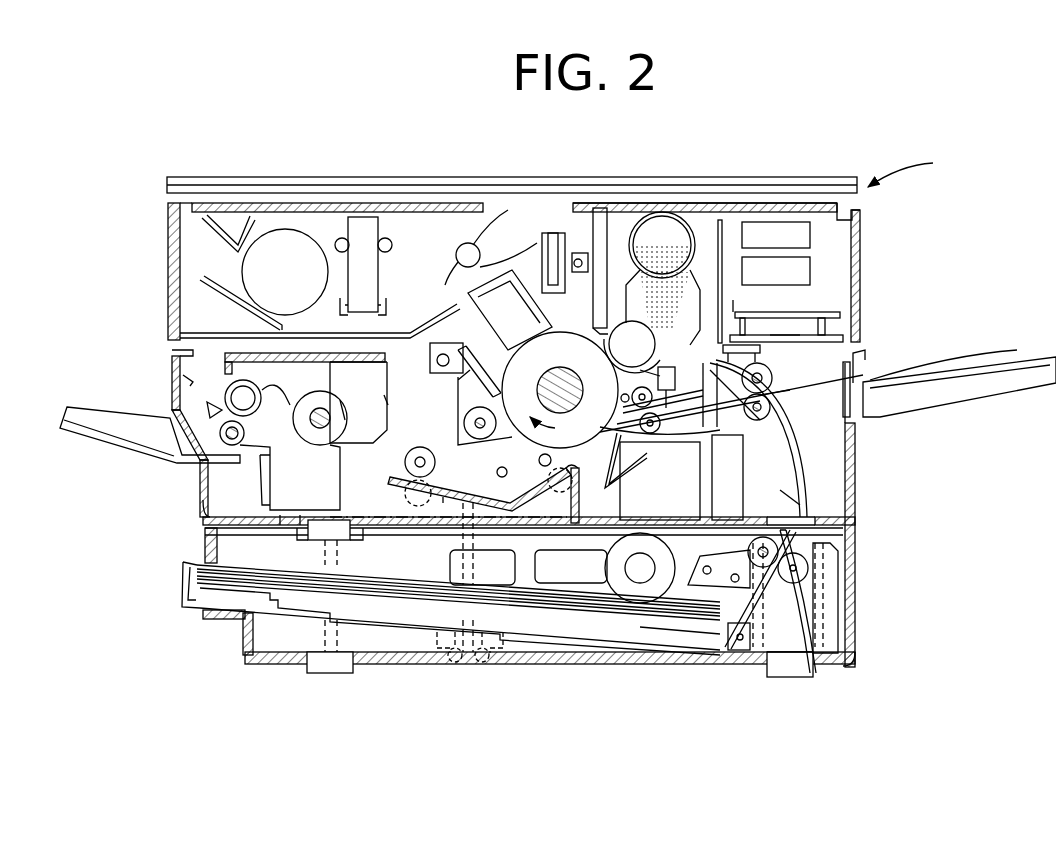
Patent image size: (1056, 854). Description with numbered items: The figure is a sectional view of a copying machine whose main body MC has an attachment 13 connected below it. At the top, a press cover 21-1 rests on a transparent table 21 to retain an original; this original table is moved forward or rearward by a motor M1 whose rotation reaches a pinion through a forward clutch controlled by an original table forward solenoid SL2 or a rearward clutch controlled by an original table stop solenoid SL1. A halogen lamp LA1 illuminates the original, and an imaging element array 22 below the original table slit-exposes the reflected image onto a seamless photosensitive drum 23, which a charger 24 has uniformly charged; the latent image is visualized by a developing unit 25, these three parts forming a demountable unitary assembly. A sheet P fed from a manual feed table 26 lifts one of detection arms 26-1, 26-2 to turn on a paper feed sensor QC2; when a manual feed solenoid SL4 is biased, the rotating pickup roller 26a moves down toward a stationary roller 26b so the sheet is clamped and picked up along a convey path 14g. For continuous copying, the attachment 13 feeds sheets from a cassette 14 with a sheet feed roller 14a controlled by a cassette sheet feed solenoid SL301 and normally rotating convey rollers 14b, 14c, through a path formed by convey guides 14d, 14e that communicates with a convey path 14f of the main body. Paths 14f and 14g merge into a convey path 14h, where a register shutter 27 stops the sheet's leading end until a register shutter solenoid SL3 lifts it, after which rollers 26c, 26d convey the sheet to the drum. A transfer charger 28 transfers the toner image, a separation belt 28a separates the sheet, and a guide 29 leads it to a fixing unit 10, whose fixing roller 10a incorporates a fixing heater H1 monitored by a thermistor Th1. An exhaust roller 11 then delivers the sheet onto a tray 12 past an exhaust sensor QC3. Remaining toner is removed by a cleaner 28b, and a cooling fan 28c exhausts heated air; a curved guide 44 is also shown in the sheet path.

The press cover 21-1 is at (308, 177).
The transparent table 21 is at (620, 187).
The copying machine main body MC is at (975, 173).
The halogen lamp LA1 is at (460, 247).
The charger 24 is at (527, 287).
The imaging element array 22 is at (553, 232).
The cooling fan 28c is at (262, 272).
The developing unit 25 is at (642, 342).
The original table forward solenoid SL2 is at (800, 237).
The original table stop solenoid SL1 is at (800, 268).
The paper feed sensor QC2 is at (770, 335).
The manual feed solenoid SL4 is at (790, 313).
The pickup roller 26a is at (790, 338).
The detection arm 26-2 is at (757, 301).
The detection arm 26-1 is at (770, 373).
The stationary roller 26b is at (767, 413).
The convey path for manual sheet 14g is at (787, 400).
The convey path 14h is at (680, 421).
The register shutter solenoid SL3 is at (668, 372).
The register shutter 27 is at (683, 385).
The exhaust sensor QC3 is at (213, 410).
The tray 12 is at (77, 437).
The exhaust roller 11 is at (220, 437).
The fixing heater H1 is at (318, 412).
The fixing roller 10a is at (338, 410).
The thermistor Th1 is at (378, 406).
The fixing unit 10 is at (372, 413).
The cleaner 28b is at (465, 430).
The seamless photosensitive drum 23 is at (508, 357).
The roller 26c is at (515, 362).
The roller 26d is at (572, 405).
The separation belt 28a is at (530, 465).
The transfer charger 28 is at (637, 455).
The motor M1 is at (700, 483).
The curved guide 44 is at (790, 453).
The convey path 14f is at (793, 490).
The convey roller 14b is at (800, 520).
The guide 29 is at (443, 497).
The transfer sheet P is at (185, 565).
The manual feed table 26 is at (988, 390).
The cassette 14 is at (545, 640).
The sheet feed roller 14a is at (635, 595).
The cassette sheet feed solenoid SL301 is at (690, 582).
The convey roller 14c is at (803, 568).
The attachment 13 is at (855, 603).
The convey guide 14e is at (787, 640).
The convey guide 14d is at (812, 673).